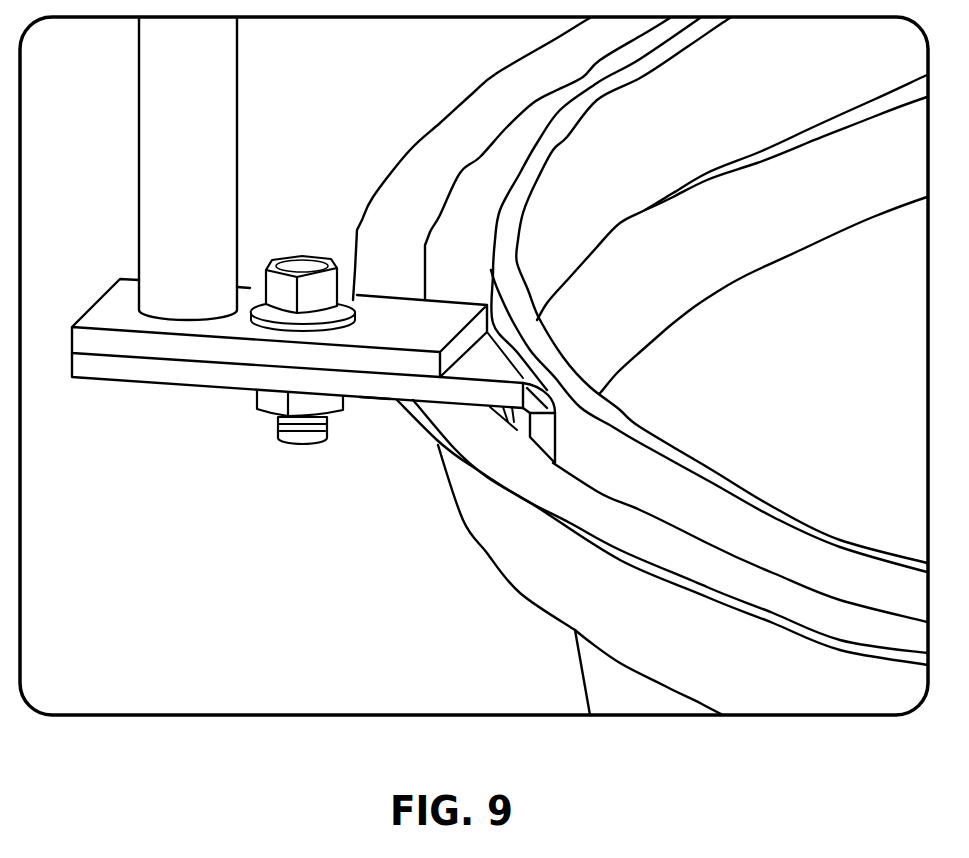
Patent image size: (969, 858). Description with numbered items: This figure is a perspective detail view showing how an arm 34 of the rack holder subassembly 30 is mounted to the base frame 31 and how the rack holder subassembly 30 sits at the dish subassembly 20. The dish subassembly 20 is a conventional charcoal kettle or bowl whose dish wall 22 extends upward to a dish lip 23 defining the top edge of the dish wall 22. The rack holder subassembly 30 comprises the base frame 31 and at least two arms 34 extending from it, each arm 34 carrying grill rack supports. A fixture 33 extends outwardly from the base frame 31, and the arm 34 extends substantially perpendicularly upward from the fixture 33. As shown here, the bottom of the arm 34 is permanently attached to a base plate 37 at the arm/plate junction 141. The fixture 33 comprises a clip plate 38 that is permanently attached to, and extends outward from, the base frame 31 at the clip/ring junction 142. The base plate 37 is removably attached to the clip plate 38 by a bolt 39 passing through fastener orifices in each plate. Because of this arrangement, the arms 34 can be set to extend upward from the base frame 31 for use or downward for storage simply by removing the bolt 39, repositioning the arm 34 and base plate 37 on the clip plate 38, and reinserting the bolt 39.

The dish subassembly 20 is at (437, 124).
The dish wall 22 is at (584, 683).
The dish lip 23 is at (486, 550).
The rack holder subassembly 30 is at (683, 454).
The base frame 31 is at (817, 522).
The fixture 33 is at (372, 398).
The arm 34 is at (139, 153).
The base plate 37 is at (104, 295).
The clip plate 38 is at (150, 384).
The bolt 39 is at (303, 436).
The arm/plate junction 141 is at (193, 324).
The clip/ring junction 142 is at (553, 442).